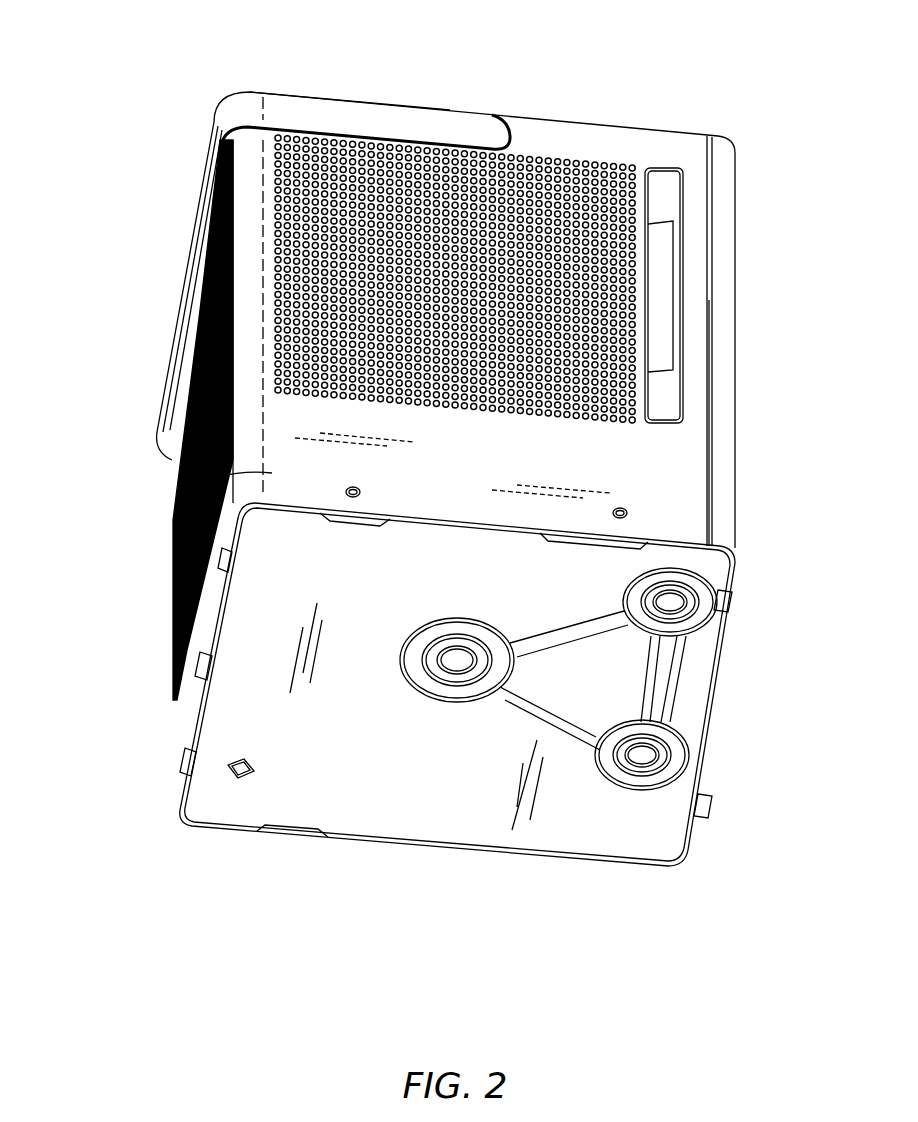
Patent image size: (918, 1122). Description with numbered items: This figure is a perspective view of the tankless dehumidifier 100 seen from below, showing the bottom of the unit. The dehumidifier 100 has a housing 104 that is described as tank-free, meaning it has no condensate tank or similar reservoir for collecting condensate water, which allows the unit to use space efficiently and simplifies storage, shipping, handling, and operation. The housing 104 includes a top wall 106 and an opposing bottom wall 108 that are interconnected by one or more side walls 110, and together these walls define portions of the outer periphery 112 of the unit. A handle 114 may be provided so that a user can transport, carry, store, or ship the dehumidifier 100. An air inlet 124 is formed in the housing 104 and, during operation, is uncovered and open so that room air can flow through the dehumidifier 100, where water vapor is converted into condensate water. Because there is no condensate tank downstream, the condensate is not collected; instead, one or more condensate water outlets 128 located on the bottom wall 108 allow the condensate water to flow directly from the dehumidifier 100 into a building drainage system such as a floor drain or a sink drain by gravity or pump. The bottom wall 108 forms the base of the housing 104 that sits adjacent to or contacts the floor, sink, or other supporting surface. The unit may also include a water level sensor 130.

The dehumidifier 100 is at (118, 555).
The housing 104 is at (720, 502).
The top wall 106 is at (637, 142).
The bottom wall 108 is at (575, 835).
The side wall 110 is at (178, 507).
The outer periphery 112 is at (724, 446).
The handle 114 is at (308, 125).
The air inlet 124 is at (573, 168).
The condensate water outlet 128 is at (258, 770).
The water level sensor 130 is at (700, 620).